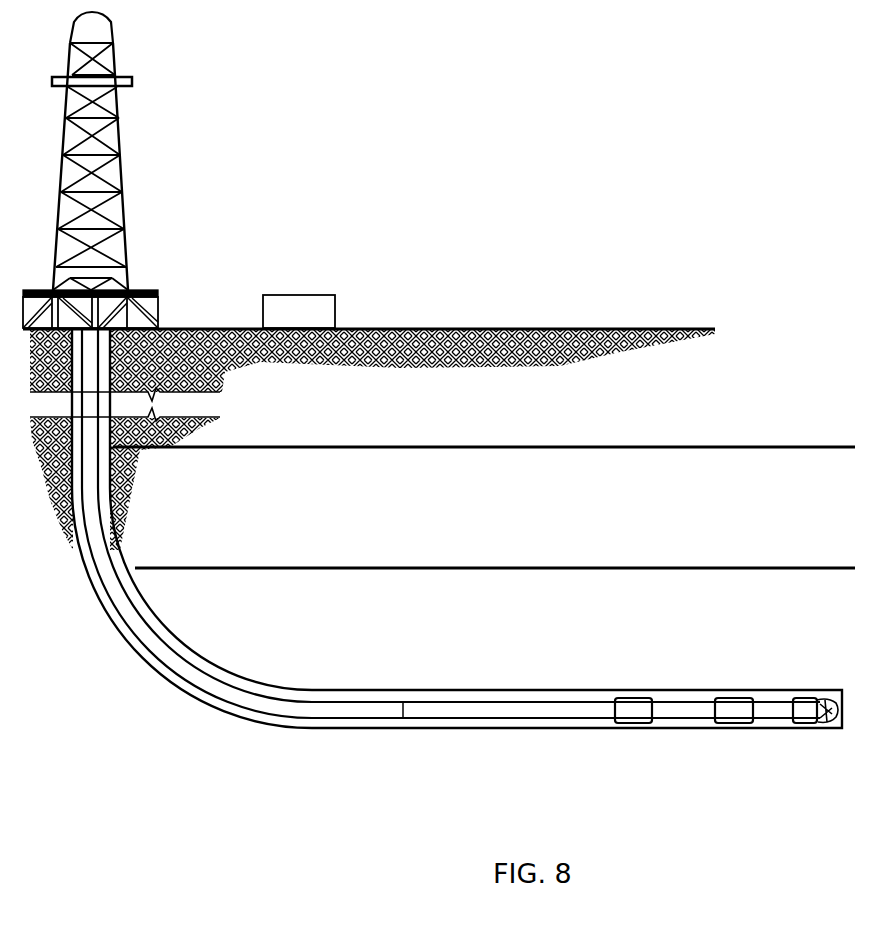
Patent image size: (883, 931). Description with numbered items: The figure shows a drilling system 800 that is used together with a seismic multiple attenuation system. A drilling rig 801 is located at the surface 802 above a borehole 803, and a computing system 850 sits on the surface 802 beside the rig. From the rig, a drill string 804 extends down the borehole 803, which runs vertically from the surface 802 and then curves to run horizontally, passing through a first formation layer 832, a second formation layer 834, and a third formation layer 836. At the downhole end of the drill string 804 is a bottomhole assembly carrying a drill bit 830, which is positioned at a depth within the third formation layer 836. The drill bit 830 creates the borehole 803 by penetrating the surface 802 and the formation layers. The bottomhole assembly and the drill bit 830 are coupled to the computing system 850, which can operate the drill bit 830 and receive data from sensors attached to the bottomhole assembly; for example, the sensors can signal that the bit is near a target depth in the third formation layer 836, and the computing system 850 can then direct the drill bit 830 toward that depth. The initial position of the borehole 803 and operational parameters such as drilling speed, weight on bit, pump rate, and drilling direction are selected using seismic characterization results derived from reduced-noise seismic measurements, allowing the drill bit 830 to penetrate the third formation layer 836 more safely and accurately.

The drilling system 800 is at (218, 176).
The drilling rig 801 is at (130, 228).
The surface 802 is at (222, 330).
The computing system 850 is at (298, 295).
The borehole 803 is at (250, 675).
The drill string 804 is at (443, 702).
The drill bit 830 is at (808, 697).
The first formation layer 832 is at (333, 422).
The second formation layer 834 is at (513, 536).
The third formation layer 836 is at (575, 621).